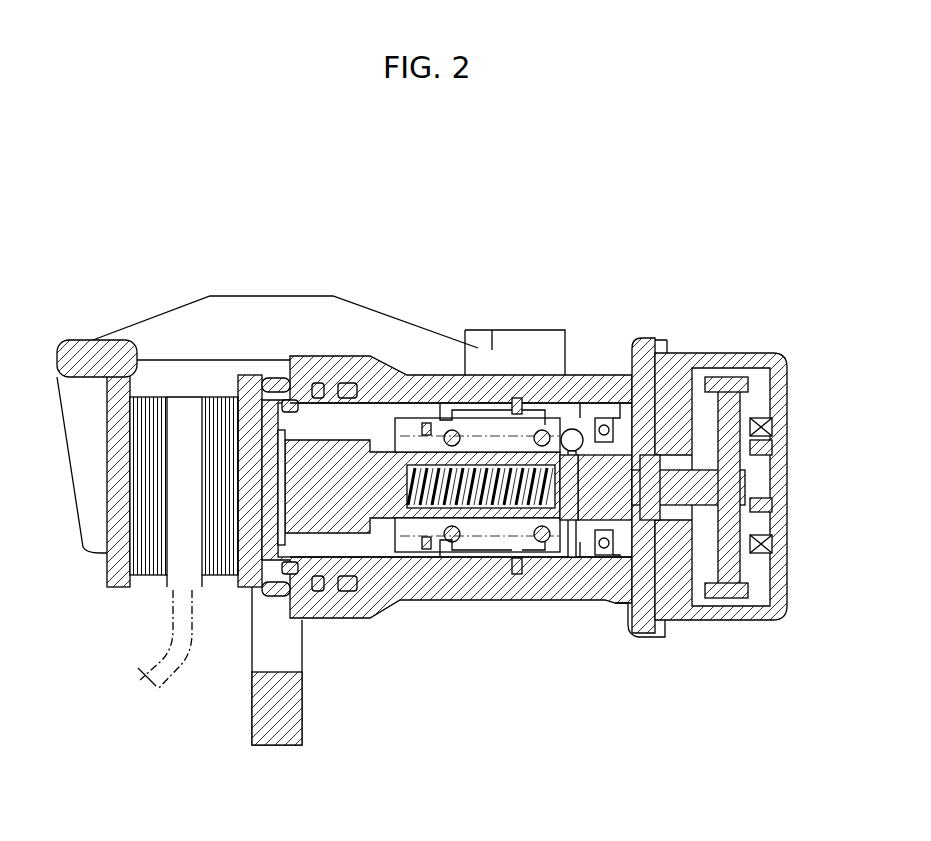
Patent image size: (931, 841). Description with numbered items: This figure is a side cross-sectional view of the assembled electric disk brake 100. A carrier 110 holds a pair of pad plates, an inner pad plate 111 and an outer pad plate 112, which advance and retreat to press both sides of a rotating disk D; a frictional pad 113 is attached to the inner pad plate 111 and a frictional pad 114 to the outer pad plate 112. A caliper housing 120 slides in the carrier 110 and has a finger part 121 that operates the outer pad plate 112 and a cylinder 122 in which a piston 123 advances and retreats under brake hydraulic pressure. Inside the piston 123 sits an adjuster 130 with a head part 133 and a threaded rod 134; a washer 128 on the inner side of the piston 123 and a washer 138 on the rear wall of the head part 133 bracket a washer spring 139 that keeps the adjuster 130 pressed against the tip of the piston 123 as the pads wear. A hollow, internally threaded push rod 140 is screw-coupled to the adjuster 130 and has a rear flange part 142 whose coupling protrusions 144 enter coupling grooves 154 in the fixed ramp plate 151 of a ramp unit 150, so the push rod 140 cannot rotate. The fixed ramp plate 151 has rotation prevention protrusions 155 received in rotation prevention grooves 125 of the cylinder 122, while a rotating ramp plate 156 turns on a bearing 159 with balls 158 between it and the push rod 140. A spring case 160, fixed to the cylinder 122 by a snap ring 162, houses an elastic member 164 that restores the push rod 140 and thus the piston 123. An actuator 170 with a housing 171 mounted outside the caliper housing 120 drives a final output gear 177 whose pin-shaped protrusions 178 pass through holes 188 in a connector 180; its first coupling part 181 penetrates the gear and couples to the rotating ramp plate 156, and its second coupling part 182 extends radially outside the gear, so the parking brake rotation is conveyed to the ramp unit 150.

The electric disk brake 100 is at (422, 252).
The carrier 110 is at (265, 700).
The inner pad plate 111 is at (248, 590).
The outer pad plate 112 is at (122, 590).
The frictional pad 113 is at (218, 578).
The frictional pad 114 is at (152, 578).
The disk D is at (147, 688).
The caliper housing 120 is at (256, 295).
The finger part 121 is at (80, 488).
The cylinder 122 is at (455, 385).
The piston 123 is at (330, 600).
The rotation prevention groove 125 is at (645, 635).
The washer 128 is at (412, 395).
The adjuster 130 is at (416, 672).
The head part 133 is at (360, 605).
The rod 134 is at (405, 600).
The washer 138 is at (345, 378).
The washer spring 139 is at (358, 383).
The push rod 140 is at (455, 600).
The flange part 142 is at (585, 415).
The coupling protrusion 144 is at (555, 600).
The ramp unit 150 is at (645, 350).
The fixed ramp plate 151 is at (592, 600).
The coupling groove 154 is at (530, 590).
The rotation prevention protrusion 155 is at (620, 600).
The rotating ramp plate 156 is at (572, 600).
The ball 158 is at (602, 428).
The bearing 159 is at (620, 400).
The spring case 160 is at (468, 420).
The snap ring 162 is at (517, 398).
The elastic member 164 is at (540, 420).
The actuator 170 is at (751, 344).
The housing 171 is at (700, 370).
The final output gear 177 is at (765, 412).
The protrusion 178 is at (765, 448).
The connector 180 is at (745, 695).
The first coupling part 181 is at (705, 600).
The second coupling part 182 is at (730, 600).
The hole 188 is at (765, 508).